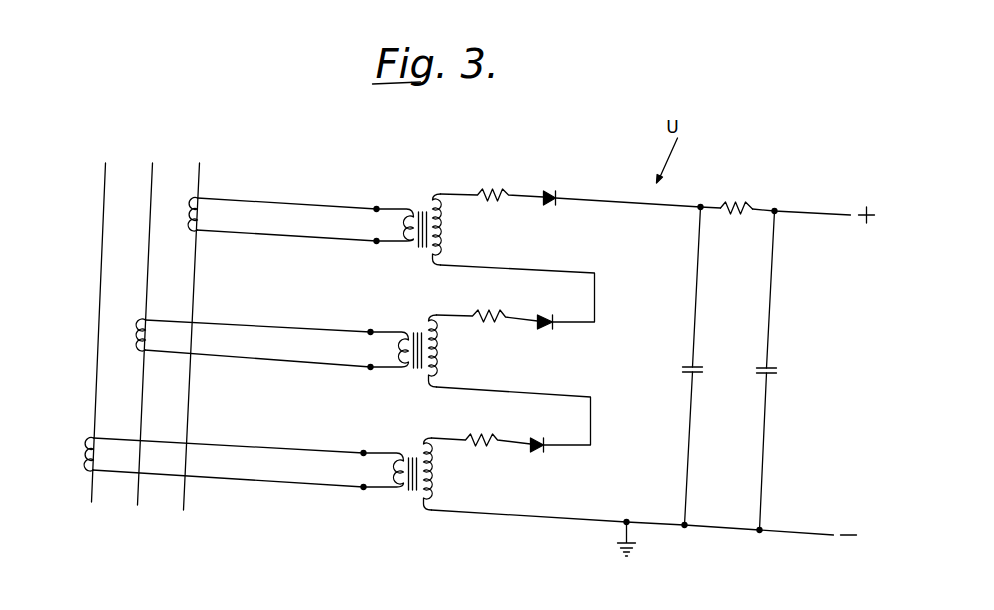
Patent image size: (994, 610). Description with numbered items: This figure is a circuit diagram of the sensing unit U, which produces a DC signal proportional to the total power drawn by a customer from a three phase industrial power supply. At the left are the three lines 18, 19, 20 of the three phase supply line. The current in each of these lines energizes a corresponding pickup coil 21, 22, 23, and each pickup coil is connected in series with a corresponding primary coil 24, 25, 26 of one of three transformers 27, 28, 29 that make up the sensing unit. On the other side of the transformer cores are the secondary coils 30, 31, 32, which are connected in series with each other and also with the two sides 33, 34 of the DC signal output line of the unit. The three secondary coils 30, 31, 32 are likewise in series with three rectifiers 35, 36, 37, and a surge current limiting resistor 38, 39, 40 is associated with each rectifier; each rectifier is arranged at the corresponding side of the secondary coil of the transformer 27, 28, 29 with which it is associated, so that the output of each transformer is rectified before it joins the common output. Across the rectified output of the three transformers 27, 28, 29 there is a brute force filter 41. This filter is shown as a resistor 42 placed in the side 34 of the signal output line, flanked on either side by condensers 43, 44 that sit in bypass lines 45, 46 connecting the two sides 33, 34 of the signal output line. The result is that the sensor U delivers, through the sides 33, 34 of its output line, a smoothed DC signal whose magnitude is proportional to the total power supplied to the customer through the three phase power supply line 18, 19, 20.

The power supply line 18 is at (104, 173).
The power supply line 19 is at (151, 173).
The power supply line 20 is at (198, 173).
The pickup coil 21 is at (82, 456).
The pickup coil 22 is at (136, 335).
The pickup coil 23 is at (187, 216).
The primary coil 24 is at (400, 493).
The primary coil 25 is at (404, 369).
The primary coil 26 is at (410, 246).
The transformer 27 is at (402, 533).
The transformer 28 is at (407, 384).
The transformer 29 is at (421, 190).
The secondary coil 30 is at (426, 487).
The secondary coil 31 is at (434, 356).
The secondary coil 32 is at (440, 224).
The side of signal output line 33 is at (795, 535).
The side of signal output line 34 is at (812, 213).
The rectifier 35 is at (531, 456).
The rectifier 36 is at (541, 332).
The rectifier 37 is at (553, 191).
The surge current limiting resistor 38 is at (497, 450).
The surge current limiting resistor 39 is at (502, 317).
The surge current limiting resistor 40 is at (505, 190).
The brute force filter 41 is at (749, 339).
The resistor 42 is at (752, 204).
The condenser 43 is at (697, 363).
The condenser 44 is at (772, 366).
The bypass line 45 is at (697, 272).
The bypass line 46 is at (772, 277).